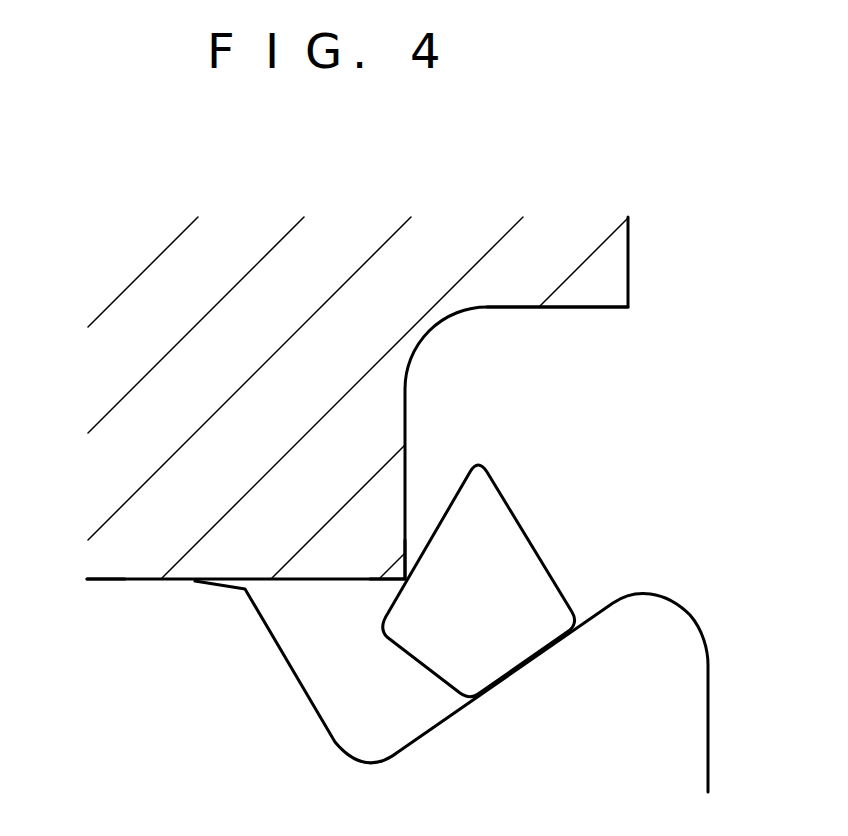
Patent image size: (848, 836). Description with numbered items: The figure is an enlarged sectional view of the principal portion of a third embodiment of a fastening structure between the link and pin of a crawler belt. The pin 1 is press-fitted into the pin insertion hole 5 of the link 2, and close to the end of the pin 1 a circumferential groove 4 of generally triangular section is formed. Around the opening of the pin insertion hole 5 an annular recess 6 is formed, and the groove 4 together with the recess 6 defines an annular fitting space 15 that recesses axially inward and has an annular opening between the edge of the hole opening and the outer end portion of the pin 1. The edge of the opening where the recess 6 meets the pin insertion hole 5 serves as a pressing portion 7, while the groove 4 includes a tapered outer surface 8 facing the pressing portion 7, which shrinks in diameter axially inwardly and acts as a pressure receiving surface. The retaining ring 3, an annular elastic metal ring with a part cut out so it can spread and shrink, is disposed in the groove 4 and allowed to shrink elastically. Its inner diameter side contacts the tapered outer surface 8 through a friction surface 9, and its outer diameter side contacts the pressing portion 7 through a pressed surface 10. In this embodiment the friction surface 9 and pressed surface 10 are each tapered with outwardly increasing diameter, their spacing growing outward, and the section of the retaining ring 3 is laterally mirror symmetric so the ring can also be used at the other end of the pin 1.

The pin 1 is at (106, 766).
The link 2 is at (68, 268).
The retaining ring 3 is at (522, 570).
The circumferential groove 4 is at (308, 702).
The pin insertion hole 5 is at (118, 582).
The annular recess 6 is at (583, 307).
The pressing portion 7 is at (413, 580).
The tapered outer surface 8 is at (580, 622).
The friction surface 9 is at (505, 660).
The pressed surface 10 is at (450, 494).
The annular fitting space 15 is at (645, 466).